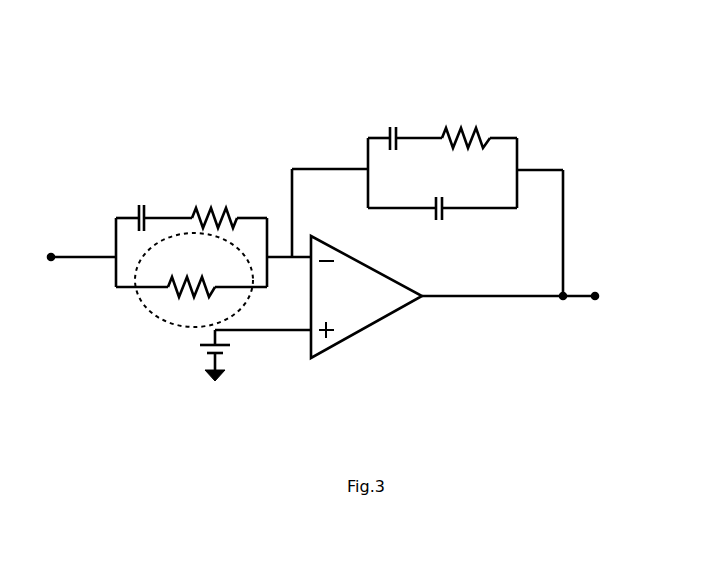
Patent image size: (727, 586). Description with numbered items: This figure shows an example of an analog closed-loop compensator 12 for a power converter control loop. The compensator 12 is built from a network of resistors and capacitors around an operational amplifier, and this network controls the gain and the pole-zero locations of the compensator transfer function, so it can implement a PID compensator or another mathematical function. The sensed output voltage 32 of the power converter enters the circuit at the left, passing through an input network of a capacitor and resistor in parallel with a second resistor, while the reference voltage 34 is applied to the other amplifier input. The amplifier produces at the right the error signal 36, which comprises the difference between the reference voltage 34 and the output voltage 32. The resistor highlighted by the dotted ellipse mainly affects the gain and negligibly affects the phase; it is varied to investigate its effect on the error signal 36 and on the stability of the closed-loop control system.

The closed-loop compensator 12 is at (498, 60).
The output voltage 32 is at (65, 208).
The reference voltage 34 is at (177, 372).
The error signal 36 is at (627, 247).